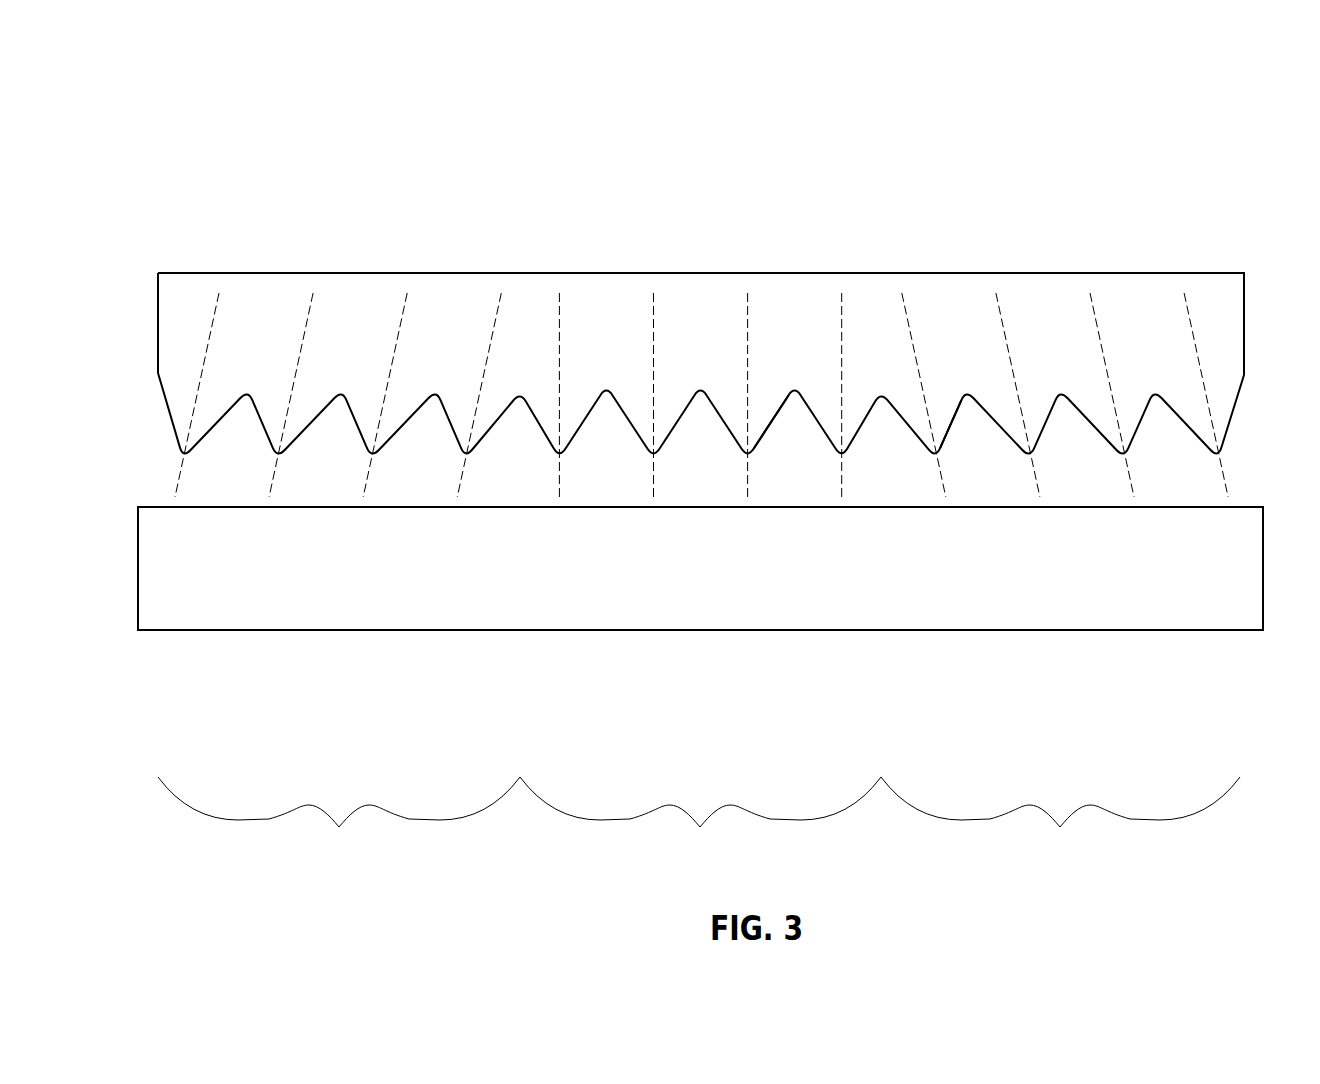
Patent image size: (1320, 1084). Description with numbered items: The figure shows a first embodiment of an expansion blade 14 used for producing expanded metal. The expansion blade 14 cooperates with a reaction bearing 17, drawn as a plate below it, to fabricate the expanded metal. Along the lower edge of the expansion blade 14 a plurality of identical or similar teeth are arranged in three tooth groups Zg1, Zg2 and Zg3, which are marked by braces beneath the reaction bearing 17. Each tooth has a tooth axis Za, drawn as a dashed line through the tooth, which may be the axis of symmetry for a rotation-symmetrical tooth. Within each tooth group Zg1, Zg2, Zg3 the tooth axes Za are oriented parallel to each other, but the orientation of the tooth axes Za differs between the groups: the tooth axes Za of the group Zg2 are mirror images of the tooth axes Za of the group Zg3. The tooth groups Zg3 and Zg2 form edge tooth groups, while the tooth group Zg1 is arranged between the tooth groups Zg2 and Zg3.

The expansion blade 14 is at (1045, 304).
The reaction bearing 17 is at (1213, 594).
The tooth axes Za is at (306, 330).
The tooth group Zg1 is at (700, 823).
The tooth group Zg2 is at (1060, 823).
The tooth group Zg3 is at (339, 823).